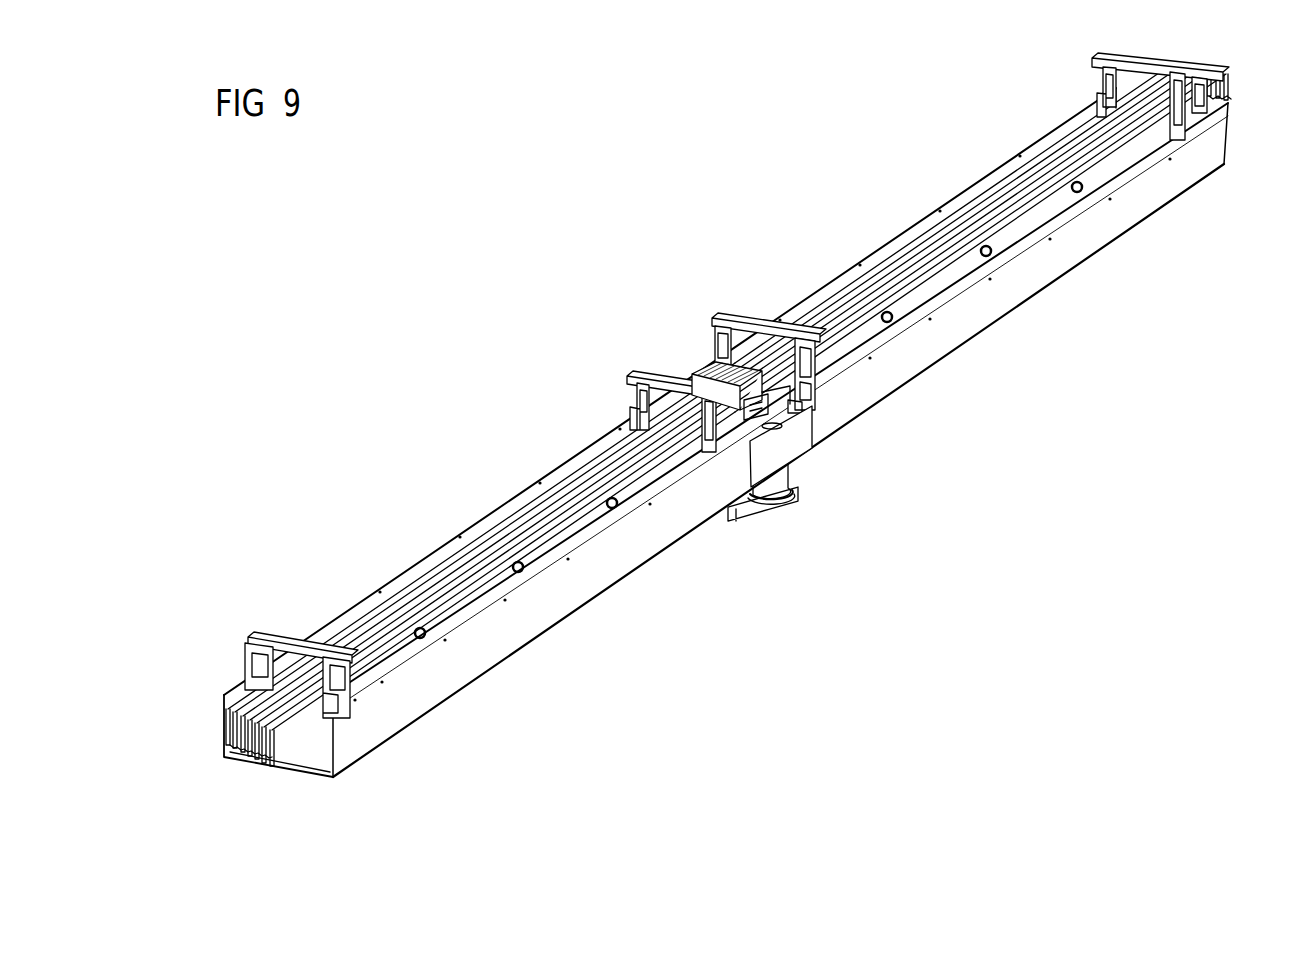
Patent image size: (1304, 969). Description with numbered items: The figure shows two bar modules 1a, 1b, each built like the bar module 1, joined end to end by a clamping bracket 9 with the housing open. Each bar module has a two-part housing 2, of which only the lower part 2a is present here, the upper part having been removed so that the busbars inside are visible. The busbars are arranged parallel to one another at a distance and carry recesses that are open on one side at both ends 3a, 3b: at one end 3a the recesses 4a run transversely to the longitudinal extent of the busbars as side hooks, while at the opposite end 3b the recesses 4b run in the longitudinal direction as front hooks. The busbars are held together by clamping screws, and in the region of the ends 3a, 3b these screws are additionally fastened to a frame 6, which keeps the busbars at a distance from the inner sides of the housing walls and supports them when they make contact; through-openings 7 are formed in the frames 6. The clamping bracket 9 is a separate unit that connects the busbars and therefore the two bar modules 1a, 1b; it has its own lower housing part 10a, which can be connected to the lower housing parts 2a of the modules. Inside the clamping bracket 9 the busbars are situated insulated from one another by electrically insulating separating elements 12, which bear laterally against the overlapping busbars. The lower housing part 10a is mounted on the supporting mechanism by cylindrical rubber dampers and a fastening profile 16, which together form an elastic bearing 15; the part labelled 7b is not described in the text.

The bar module 1 is at (590, 248).
The bar module 1a is at (500, 478).
The bar module 1b is at (885, 220).
The housing 2 is at (920, 388).
The lower part of the housing 2a is at (1060, 266).
The end of the busbars 3a is at (208, 686).
The end of the busbars 3b is at (1226, 58).
The recess 4a is at (286, 733).
The recess 4b is at (1224, 84).
The frame 6 is at (1143, 62).
The through-opening 7 is at (1190, 102).
The holder element 7b is at (800, 438).
The clamping bracket 9 is at (698, 352).
The lower housing part 10a is at (795, 455).
The separating element 12 is at (772, 392).
The elastic bearing 15 is at (798, 497).
The fastening profile 16 is at (750, 513).